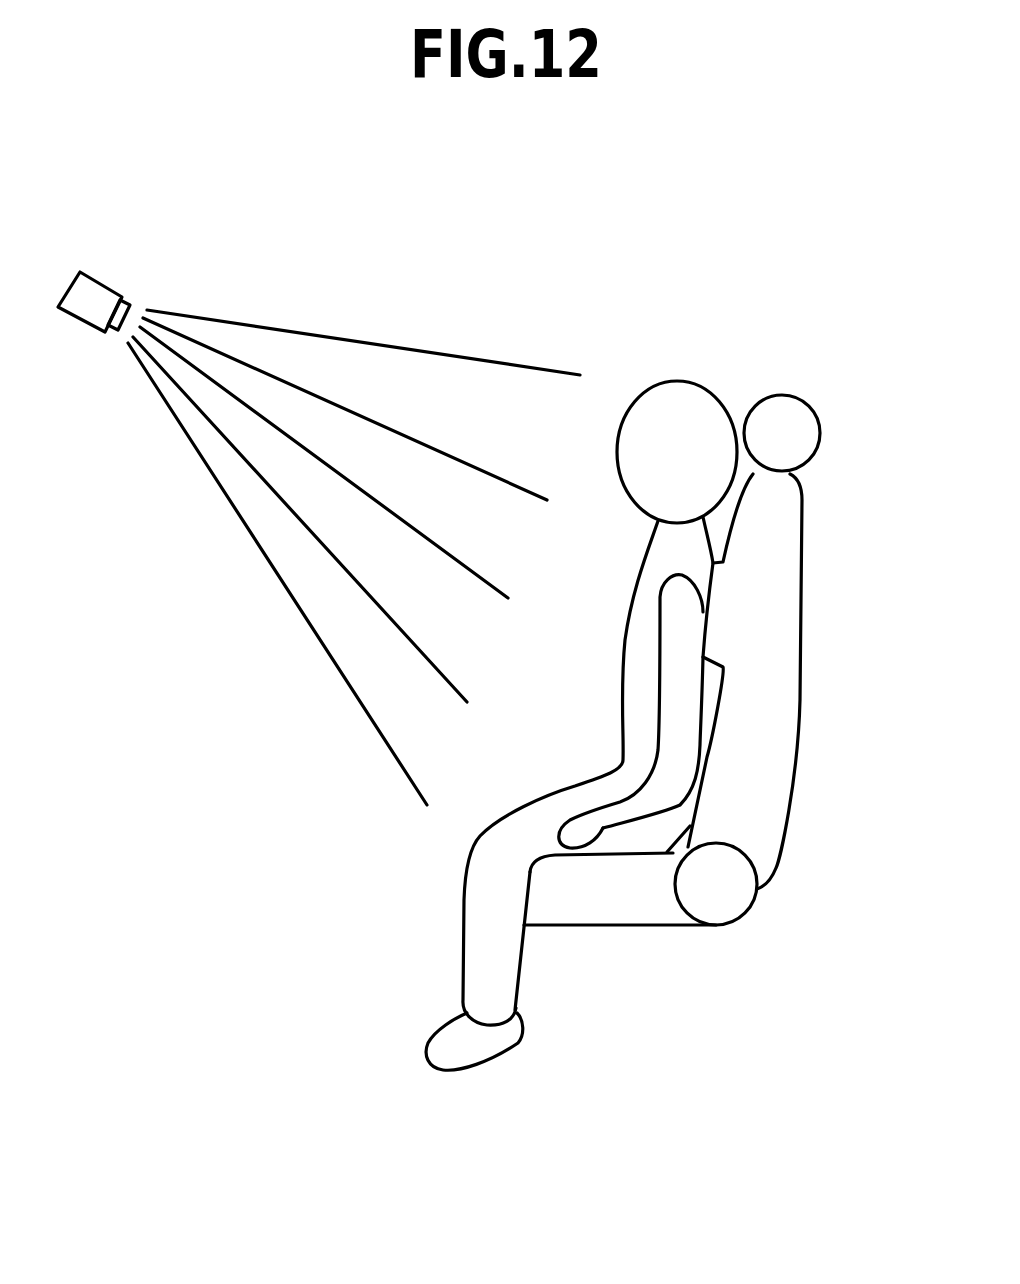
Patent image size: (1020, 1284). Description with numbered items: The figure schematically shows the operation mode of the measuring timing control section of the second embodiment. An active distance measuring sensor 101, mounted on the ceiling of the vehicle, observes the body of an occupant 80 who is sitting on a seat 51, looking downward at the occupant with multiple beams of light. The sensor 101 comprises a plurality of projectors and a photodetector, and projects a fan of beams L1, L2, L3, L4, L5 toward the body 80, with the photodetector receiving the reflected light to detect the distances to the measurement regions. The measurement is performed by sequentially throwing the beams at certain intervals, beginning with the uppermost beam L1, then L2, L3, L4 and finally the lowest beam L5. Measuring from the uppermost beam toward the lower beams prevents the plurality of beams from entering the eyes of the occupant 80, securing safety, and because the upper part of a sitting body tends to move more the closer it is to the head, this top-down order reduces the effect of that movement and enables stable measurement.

The active distance measuring sensor 101 is at (98, 293).
The body of an occupant 80 is at (677, 390).
The seat 51 is at (802, 683).
The uppermost beam L1 is at (366, 342).
The second beam L2 is at (361, 409).
The third beam L3 is at (344, 462).
The fourth beam L4 is at (319, 519).
The fifth beam L5 is at (299, 574).